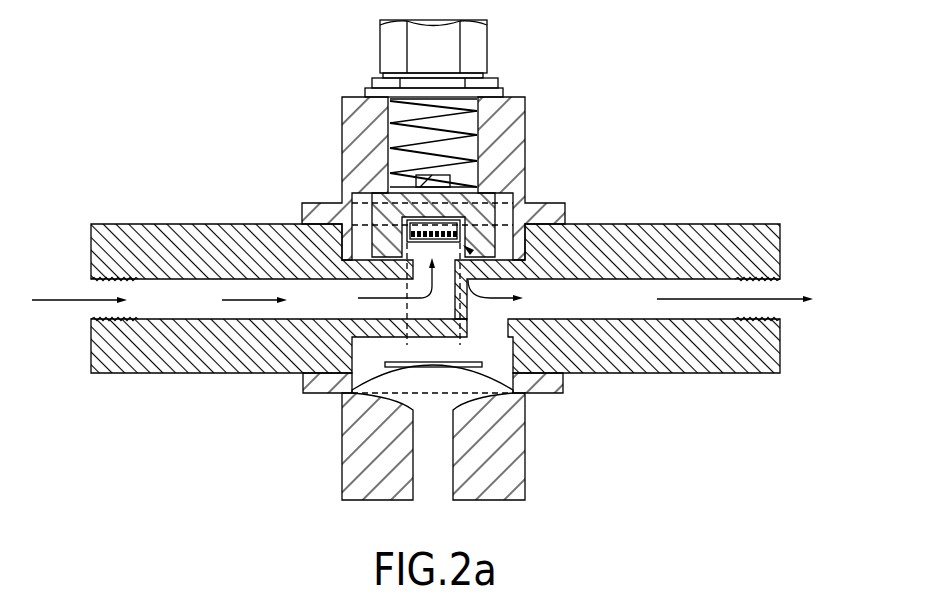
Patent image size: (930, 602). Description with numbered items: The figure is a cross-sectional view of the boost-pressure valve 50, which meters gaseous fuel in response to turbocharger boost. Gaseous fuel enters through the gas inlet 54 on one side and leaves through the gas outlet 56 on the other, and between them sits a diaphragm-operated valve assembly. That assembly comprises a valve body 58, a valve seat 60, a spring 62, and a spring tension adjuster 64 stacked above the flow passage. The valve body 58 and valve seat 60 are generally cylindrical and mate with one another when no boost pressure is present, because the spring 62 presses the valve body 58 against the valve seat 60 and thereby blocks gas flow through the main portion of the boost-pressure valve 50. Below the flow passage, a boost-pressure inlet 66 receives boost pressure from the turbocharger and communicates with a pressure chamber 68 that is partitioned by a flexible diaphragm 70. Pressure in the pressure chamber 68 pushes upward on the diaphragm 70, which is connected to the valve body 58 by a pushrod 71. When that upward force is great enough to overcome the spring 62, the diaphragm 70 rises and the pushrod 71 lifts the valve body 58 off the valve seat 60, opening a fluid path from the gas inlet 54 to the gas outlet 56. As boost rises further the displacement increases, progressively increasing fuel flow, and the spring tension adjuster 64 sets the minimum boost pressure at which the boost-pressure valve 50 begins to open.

The boost-pressure valve 50 is at (101, 432).
The gas inlet 54 is at (91, 288).
The gas outlet 56 is at (780, 288).
The valve body 58 is at (372, 200).
The valve seat 60 is at (462, 217).
The spring 62 is at (388, 137).
The spring tension adjuster 64 is at (487, 37).
The boost-pressure inlet 66 is at (433, 490).
The pressure chamber 68 is at (392, 400).
The flexible diaphragm 70 is at (477, 370).
The pushrod 71 is at (400, 350).